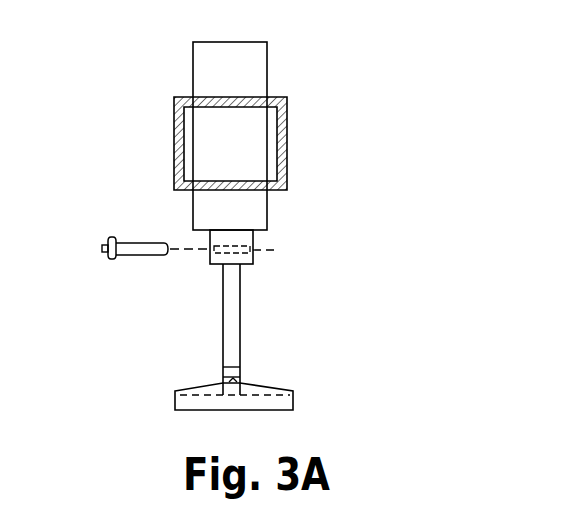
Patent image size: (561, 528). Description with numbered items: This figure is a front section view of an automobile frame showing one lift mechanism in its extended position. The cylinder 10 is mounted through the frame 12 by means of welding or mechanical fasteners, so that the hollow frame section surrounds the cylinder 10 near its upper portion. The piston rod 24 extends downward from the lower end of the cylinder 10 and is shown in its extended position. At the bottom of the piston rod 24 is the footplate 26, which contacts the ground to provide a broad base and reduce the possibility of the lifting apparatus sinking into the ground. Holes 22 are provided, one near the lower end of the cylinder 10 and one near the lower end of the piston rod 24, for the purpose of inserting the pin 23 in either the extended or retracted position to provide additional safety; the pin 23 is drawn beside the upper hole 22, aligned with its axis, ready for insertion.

The cylinder 10 is at (267, 74).
The frame 12 is at (288, 145).
The holes 22 is at (256, 252).
The pin 23 is at (137, 247).
The piston rod 24 is at (232, 288).
The footplate 26 is at (290, 395).